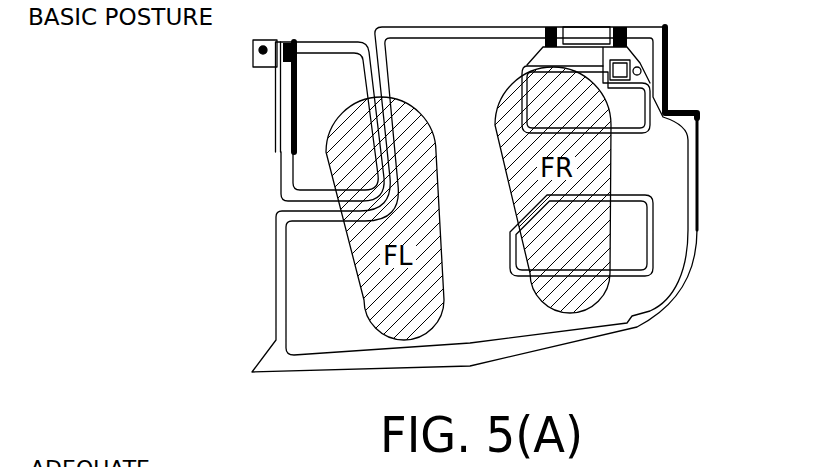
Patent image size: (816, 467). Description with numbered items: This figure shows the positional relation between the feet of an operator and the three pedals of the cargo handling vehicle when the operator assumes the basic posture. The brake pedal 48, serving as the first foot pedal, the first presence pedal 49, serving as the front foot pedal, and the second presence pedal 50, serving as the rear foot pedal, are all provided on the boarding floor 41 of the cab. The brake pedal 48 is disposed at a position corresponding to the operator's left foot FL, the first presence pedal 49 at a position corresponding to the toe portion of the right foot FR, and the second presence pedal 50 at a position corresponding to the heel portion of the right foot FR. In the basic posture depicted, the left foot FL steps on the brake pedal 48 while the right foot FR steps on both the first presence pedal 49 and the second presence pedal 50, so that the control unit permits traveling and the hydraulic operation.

The boarding floor 41 is at (507, 323).
The brake pedal 48 is at (318, 148).
The first presence pedal 49 is at (668, 90).
The second presence pedal 50 is at (634, 238).